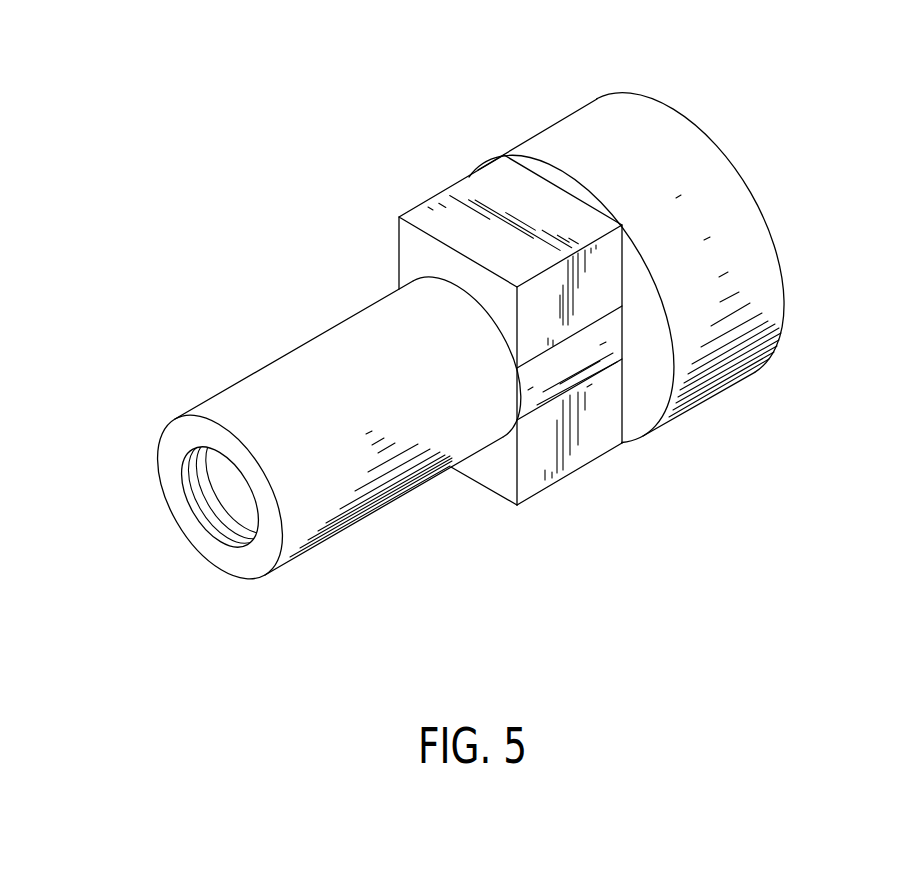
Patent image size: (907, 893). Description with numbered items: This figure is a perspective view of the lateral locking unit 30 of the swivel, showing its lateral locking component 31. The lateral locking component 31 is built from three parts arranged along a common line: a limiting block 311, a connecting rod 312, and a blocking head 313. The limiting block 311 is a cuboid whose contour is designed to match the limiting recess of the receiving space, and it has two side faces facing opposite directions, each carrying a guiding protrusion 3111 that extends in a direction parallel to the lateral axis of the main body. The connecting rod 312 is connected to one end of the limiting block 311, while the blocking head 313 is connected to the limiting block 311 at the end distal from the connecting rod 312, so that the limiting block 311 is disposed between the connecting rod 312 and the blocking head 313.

The lateral locking unit 30 is at (504, 333).
The lateral locking component 31 is at (428, 377).
The limiting block 311 is at (516, 330).
The guiding protrusion 3111 is at (575, 357).
The connecting rod 312 is at (308, 378).
The blocking head 313 is at (577, 138).